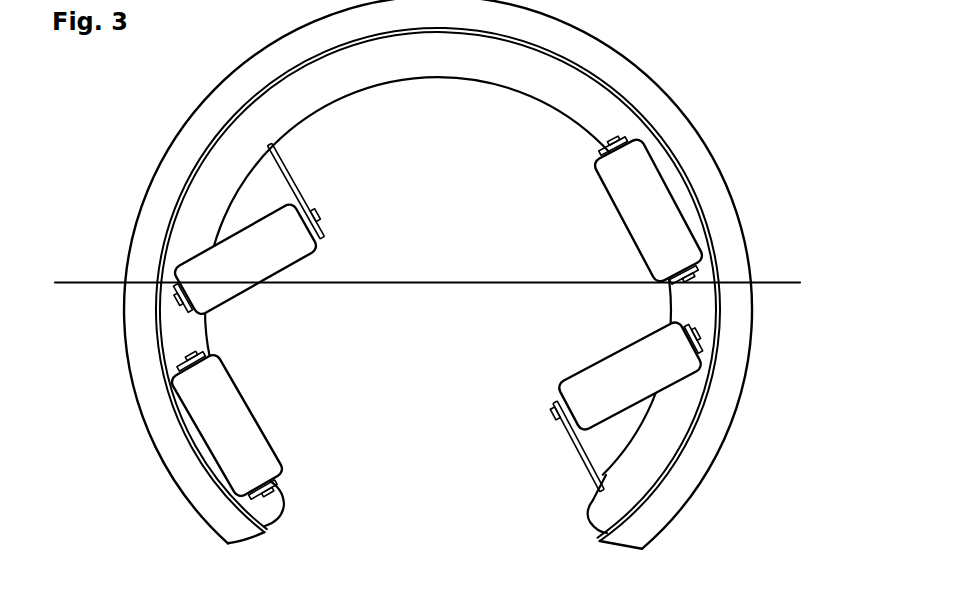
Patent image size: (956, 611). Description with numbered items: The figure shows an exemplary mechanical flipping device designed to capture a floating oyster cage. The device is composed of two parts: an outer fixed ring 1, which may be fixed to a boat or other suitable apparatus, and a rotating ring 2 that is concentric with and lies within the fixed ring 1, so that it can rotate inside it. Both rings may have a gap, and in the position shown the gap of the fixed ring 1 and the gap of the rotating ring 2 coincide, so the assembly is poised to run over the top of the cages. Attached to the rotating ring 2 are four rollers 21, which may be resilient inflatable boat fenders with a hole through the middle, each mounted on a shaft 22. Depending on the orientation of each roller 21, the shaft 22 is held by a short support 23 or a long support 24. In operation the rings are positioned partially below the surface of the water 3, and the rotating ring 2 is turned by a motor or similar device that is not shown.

The fixed ring 1 is at (693, 116).
The rotating ring 2 is at (552, 108).
The surface of the water 3 is at (768, 282).
The roller 21 is at (602, 204).
The shaft 22 is at (556, 409).
The short support 23 is at (708, 350).
The long support 24 is at (585, 464).